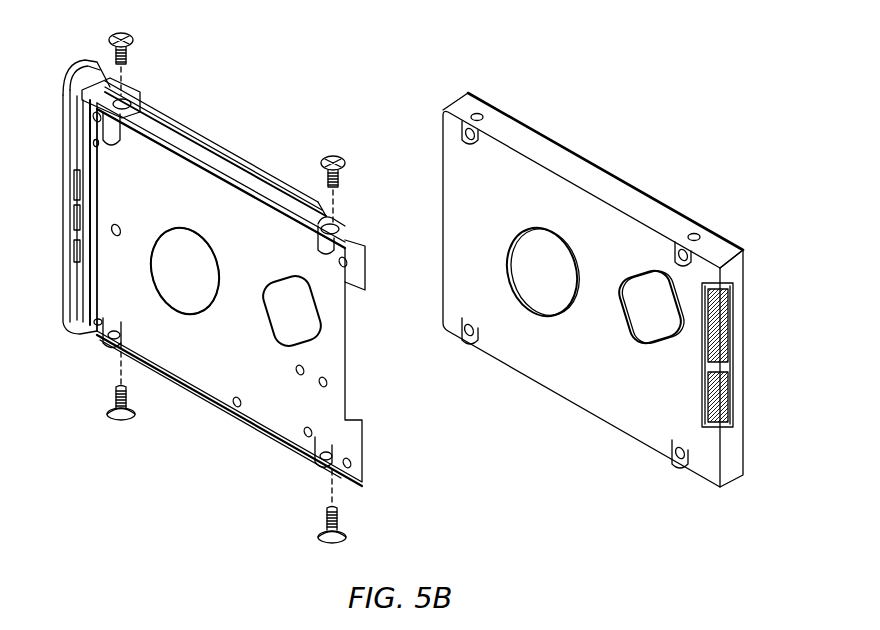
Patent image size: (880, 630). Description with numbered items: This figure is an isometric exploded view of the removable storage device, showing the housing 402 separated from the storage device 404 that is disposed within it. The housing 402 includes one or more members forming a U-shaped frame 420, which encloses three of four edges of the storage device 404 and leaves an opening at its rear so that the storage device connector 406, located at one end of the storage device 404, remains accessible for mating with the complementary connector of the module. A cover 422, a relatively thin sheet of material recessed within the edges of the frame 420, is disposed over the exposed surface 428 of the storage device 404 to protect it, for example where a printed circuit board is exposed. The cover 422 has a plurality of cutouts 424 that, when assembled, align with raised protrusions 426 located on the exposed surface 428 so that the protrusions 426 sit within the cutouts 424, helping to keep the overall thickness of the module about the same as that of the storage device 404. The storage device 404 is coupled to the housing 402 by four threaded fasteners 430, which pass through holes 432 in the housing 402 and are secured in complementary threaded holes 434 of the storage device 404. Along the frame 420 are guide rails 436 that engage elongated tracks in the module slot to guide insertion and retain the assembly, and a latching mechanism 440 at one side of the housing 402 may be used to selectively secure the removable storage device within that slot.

The housing 402 is at (249, 127).
The storage device 404 is at (568, 406).
The storage device connector 406 is at (735, 360).
The U-shaped frame 420 is at (193, 128).
The cover 422 is at (219, 366).
The cutouts 424 is at (267, 279).
The protrusions 426 is at (627, 283).
The exposed surface 428 is at (501, 193).
The threaded fasteners 430 is at (129, 33).
The holes 432 is at (130, 106).
The threaded holes 434 is at (481, 110).
The guide rails 436 is at (270, 175).
The latching mechanism 440 is at (101, 76).